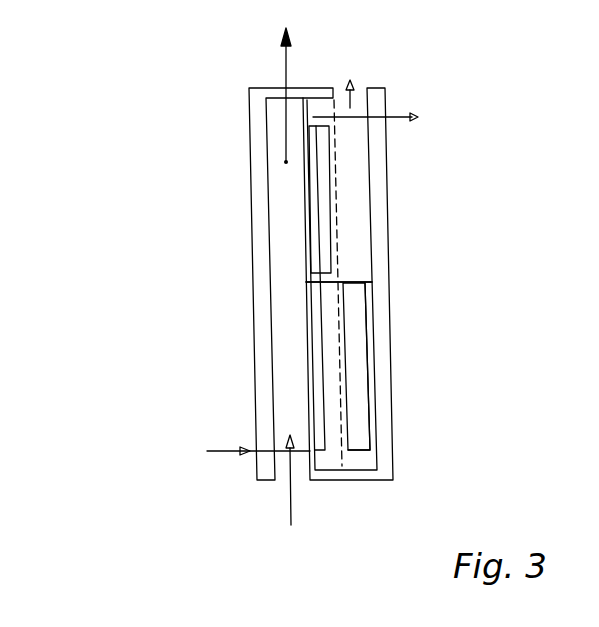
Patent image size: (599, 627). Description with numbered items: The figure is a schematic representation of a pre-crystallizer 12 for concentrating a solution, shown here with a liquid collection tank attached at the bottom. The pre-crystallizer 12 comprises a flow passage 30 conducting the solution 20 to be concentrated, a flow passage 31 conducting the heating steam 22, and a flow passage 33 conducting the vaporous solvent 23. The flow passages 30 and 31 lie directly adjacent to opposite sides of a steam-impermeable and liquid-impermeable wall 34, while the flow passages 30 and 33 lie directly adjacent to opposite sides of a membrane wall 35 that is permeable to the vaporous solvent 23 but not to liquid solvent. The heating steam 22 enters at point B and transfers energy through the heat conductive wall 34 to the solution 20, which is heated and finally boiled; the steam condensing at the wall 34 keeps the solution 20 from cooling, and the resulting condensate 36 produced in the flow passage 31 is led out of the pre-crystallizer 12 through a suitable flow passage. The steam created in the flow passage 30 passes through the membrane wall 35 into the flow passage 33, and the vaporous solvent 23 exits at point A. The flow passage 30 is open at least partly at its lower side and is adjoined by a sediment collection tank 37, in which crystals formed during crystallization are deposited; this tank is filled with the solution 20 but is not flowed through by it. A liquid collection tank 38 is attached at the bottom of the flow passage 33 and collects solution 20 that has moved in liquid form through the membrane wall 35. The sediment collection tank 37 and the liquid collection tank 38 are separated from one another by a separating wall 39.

The pre-crystallizer 12 is at (271, 285).
The solution to be concentrated 20 is at (318, 206).
The heating steam 22 is at (288, 503).
The vaporous solvent 23 is at (357, 86).
The flow passage conducting the solution to be concentrated 30 is at (313, 117).
The flow passage conducting the heating steam 31 is at (282, 211).
The flow passage conducting the vaporous solvent 33 is at (355, 263).
The steam-impermeable and liquid-impermeable wall 34 is at (310, 423).
The membrane wall 35 is at (420, 382).
The condensate 36 is at (283, 68).
The sediment collection tank 37 is at (327, 235).
The liquid collection tank 38 is at (358, 423).
The separating wall 39 is at (358, 282).